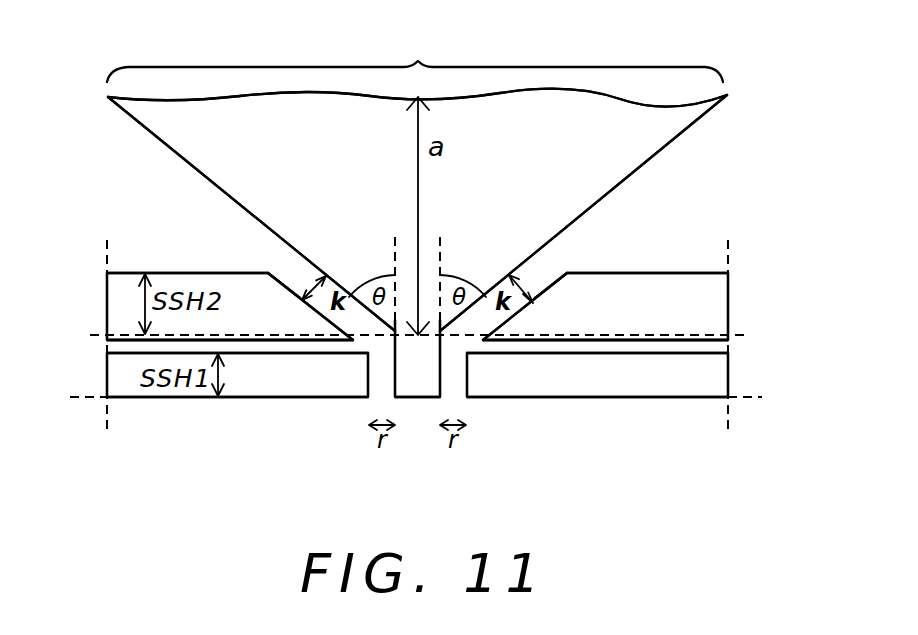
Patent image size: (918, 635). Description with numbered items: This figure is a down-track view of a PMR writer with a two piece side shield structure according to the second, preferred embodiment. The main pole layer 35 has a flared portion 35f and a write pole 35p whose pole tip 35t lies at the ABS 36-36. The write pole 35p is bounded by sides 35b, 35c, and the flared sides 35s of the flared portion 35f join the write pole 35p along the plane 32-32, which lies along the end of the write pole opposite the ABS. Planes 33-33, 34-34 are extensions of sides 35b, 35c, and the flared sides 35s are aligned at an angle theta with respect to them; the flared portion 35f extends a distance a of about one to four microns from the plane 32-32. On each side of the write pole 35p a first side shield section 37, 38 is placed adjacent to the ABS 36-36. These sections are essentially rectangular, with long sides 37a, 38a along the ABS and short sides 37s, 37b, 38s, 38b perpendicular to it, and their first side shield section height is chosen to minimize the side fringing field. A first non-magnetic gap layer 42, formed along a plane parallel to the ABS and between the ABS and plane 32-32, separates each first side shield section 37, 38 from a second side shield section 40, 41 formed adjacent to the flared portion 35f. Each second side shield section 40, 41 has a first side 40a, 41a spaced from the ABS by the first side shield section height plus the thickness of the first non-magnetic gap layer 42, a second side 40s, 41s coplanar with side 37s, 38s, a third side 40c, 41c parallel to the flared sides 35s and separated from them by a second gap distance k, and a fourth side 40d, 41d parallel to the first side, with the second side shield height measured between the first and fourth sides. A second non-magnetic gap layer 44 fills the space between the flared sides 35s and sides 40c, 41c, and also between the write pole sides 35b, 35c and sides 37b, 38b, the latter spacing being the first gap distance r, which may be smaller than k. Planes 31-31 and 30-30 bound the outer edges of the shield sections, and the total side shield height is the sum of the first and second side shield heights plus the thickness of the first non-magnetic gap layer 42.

The plane 30 is at (728, 337).
The plane 31 is at (109, 335).
The plane 32 is at (415, 334).
The plane 33 is at (397, 262).
The plane 34 is at (455, 262).
The main pole layer 35 is at (417, 181).
The flared sides 35s is at (180, 155).
The flared portion 35f is at (657, 127).
The write pole 35p is at (423, 380).
The pole tip 35t is at (421, 397).
The side of write pole 35b is at (392, 385).
The side of write pole 35c is at (445, 380).
The ABS 36 is at (418, 406).
The first side shield section 37 is at (123, 387).
The long side 37a is at (173, 398).
The short side 37b is at (367, 380).
The short side 37s is at (107, 385).
The first side shield section 38 is at (712, 368).
The long side 38a is at (650, 397).
The short side 38b is at (467, 375).
The short side 38s is at (728, 382).
The second side shield section 40 is at (107, 283).
The first side 40a is at (253, 342).
The third side 40c is at (323, 320).
The fourth side 40d is at (196, 272).
The second side 40s is at (107, 318).
The second side shield section 41 is at (712, 305).
The first side 41a is at (687, 340).
The third side 41c is at (527, 307).
The fourth side 41d is at (652, 273).
The second side 41s is at (728, 288).
The first non-magnetic gap layer 42 is at (117, 347).
The second non-magnetic gap layer 44 is at (300, 275).